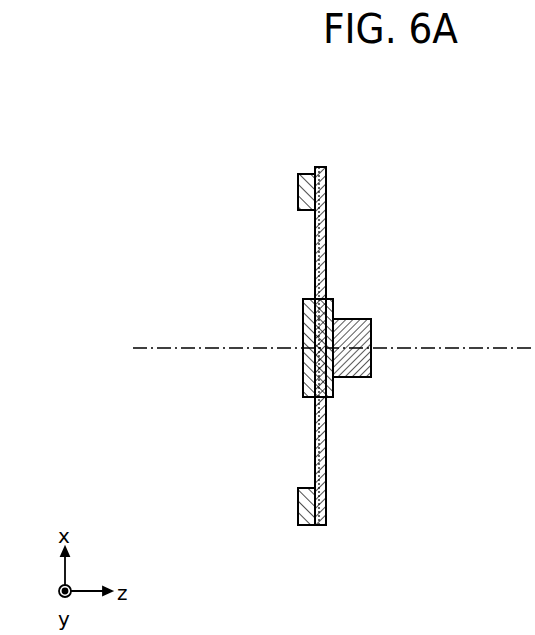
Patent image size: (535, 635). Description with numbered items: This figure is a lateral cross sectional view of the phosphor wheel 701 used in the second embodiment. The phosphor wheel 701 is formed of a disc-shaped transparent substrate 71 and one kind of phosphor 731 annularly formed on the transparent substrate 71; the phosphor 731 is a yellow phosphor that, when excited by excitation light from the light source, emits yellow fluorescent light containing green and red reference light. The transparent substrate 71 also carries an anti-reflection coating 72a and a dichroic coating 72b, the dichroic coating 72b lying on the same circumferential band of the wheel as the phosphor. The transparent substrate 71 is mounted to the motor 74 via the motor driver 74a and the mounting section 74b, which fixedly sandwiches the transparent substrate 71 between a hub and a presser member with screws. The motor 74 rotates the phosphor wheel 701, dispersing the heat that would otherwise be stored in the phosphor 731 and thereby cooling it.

The phosphor wheel 701 is at (380, 143).
The transparent substrate 71 is at (323, 525).
The anti-reflection coating 72a is at (326, 455).
The dichroic coating 72b is at (318, 525).
The phosphor 731 is at (298, 180).
The motor 74 is at (407, 295).
The motor driver 74a is at (371, 334).
The mounting section 74b is at (333, 301).